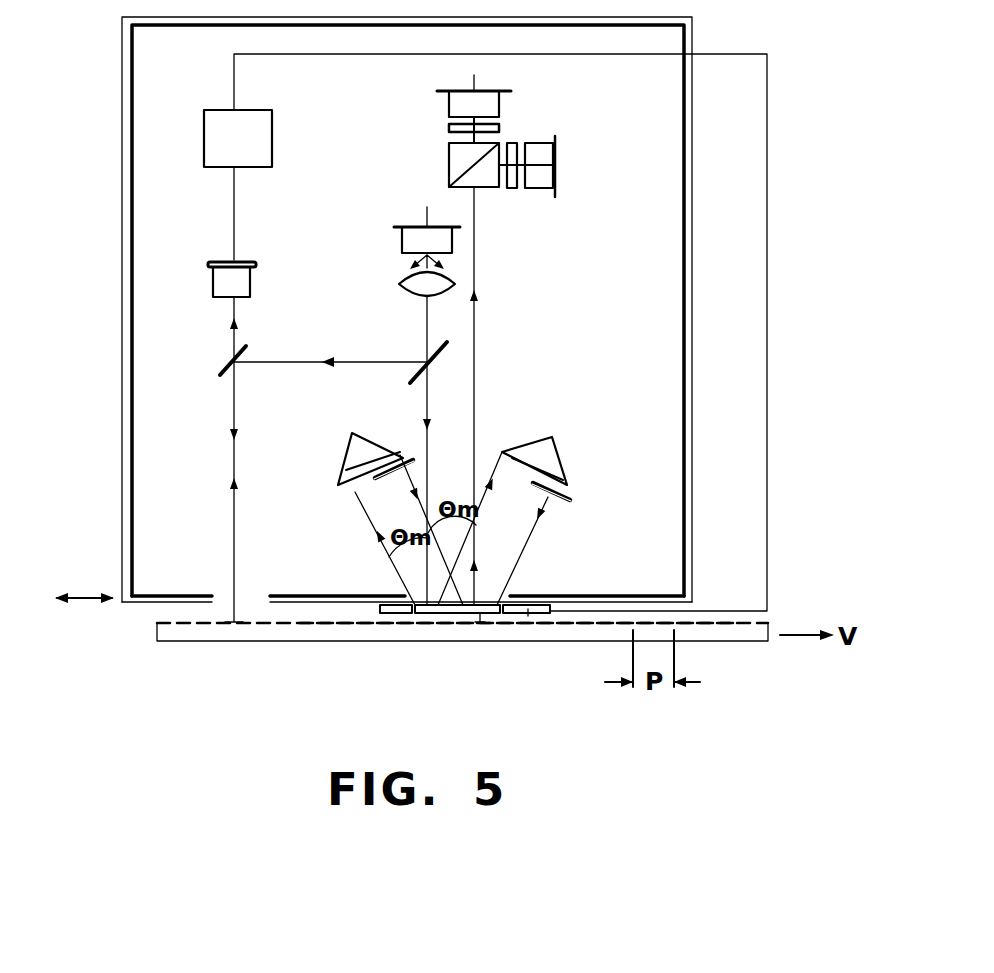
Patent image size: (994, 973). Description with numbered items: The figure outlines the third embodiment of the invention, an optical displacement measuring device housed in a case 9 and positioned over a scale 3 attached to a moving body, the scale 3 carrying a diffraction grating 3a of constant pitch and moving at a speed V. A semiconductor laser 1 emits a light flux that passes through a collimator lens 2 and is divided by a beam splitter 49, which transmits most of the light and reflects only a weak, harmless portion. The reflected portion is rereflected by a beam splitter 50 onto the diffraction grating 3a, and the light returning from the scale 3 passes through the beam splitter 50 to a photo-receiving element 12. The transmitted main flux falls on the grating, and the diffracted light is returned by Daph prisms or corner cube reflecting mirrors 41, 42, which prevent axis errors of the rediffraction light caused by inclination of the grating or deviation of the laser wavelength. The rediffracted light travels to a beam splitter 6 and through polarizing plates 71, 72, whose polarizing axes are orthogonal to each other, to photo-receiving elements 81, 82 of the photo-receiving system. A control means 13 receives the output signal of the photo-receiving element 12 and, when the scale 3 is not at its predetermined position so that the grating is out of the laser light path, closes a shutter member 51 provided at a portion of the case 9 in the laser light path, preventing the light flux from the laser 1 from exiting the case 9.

The semiconductor laser 1 is at (402, 240).
The collimator lens 2 is at (402, 283).
The scale 3 is at (740, 643).
The diffraction grating 3a is at (707, 625).
The beam splitter 6 is at (449, 158).
The case 9 is at (687, 255).
The photo-receiving element 12 is at (218, 280).
The control means 13 is at (210, 133).
The Daph prism 41 is at (352, 448).
The Daph prism 42 is at (555, 455).
The beam splitter 49 is at (440, 360).
The beam splitter 50 is at (226, 366).
The shutter member 51 is at (357, 492).
The polarizing plate 71 is at (500, 126).
The polarizing plate 72 is at (513, 143).
The photo-receiving element 81 is at (451, 100).
The photo-receiving element 82 is at (555, 173).